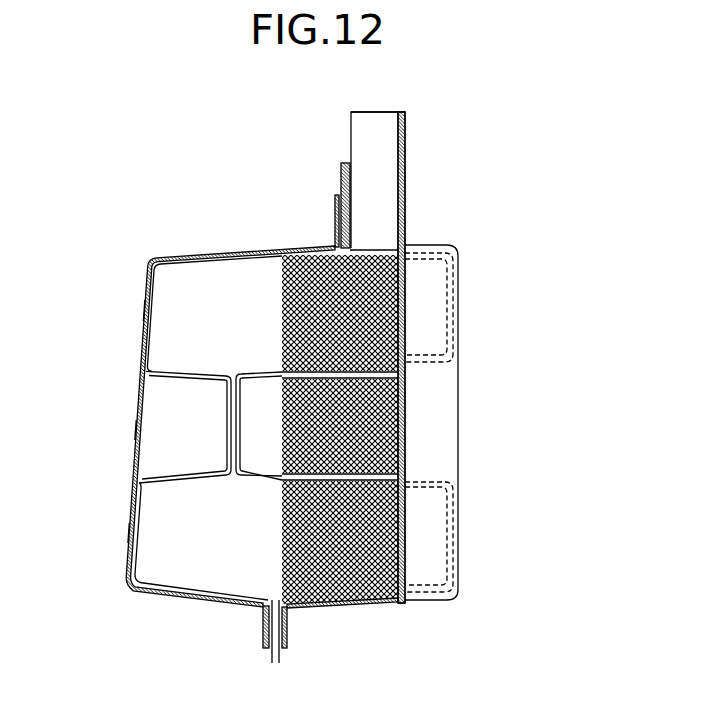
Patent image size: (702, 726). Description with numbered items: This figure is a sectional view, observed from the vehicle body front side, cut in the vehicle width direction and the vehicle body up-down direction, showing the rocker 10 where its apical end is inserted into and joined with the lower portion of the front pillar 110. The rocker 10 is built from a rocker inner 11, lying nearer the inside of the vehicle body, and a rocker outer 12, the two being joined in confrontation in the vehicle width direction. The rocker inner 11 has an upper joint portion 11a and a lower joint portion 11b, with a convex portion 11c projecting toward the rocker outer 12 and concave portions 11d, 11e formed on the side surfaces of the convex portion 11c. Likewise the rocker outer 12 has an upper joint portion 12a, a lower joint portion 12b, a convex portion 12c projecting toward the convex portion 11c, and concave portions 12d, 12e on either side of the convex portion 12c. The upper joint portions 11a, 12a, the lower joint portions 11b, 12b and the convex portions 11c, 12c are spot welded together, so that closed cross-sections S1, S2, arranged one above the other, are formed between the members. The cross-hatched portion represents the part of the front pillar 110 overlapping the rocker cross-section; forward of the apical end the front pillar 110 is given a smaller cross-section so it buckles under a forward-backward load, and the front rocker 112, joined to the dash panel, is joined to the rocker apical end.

The rocker 10 is at (92, 185).
The rocker inner 11 is at (226, 252).
The upper joint portion 11a is at (340, 183).
The lower joint portion 11b is at (264, 653).
The convex portion 11c is at (230, 457).
The concave portion 11d is at (144, 311).
The concave portion 11e is at (129, 533).
The front rocker 112 is at (136, 430).
The front pillar 110 is at (350, 130).
The rocker outer 12 is at (432, 244).
The upper joint portion 12a is at (356, 188).
The lower joint portion 12b is at (287, 653).
The convex portion 12c is at (238, 451).
The concave portion 12d is at (462, 302).
The concave portion 12e is at (459, 534).
The closed cross-section S1 is at (427, 308).
The closed cross-section S2 is at (427, 536).